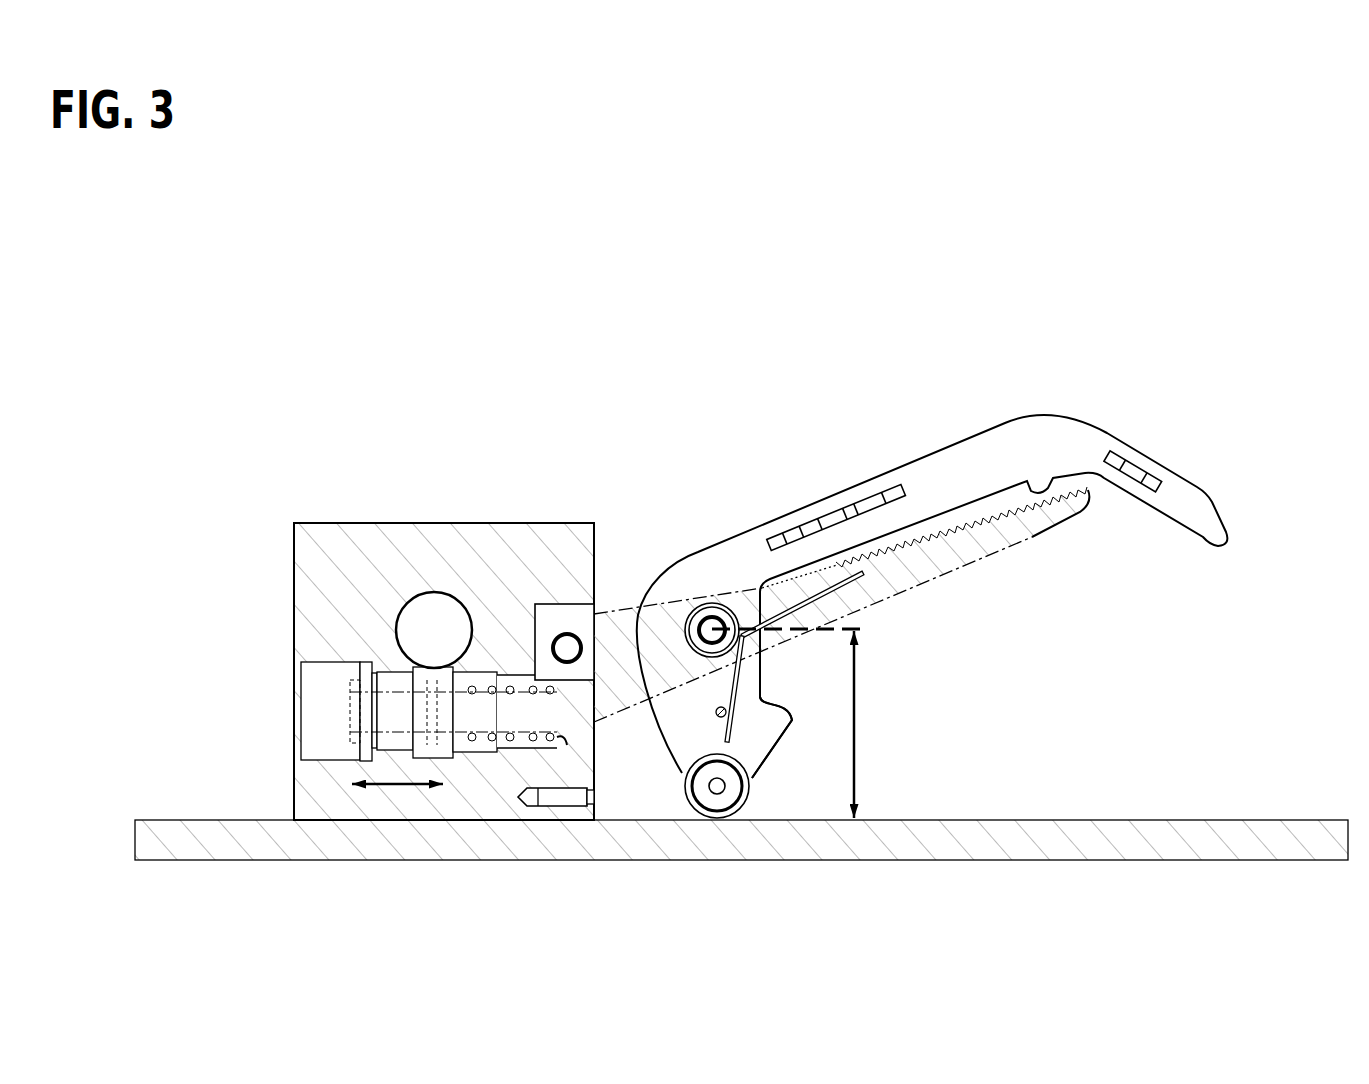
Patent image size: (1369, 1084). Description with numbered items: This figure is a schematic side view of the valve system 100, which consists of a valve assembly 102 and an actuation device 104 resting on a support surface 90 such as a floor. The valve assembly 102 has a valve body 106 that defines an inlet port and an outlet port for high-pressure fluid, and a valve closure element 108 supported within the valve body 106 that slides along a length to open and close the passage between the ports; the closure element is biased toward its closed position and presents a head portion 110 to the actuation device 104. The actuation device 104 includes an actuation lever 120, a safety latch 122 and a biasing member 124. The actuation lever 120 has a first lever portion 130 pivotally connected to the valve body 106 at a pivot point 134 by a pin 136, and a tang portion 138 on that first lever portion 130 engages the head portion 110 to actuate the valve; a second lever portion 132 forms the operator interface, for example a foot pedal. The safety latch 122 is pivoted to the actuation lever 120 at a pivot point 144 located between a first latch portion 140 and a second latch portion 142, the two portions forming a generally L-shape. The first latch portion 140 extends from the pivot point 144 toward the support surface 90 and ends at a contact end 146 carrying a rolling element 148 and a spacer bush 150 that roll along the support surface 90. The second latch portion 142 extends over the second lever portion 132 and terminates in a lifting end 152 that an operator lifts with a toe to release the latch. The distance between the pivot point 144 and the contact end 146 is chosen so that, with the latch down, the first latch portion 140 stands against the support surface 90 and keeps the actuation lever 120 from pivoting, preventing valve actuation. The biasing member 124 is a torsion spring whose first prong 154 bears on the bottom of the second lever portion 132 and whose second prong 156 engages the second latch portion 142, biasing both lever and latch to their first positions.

The support surface 90 is at (1227, 822).
The valve system 100 is at (317, 338).
The valve assembly 102 is at (310, 508).
The actuation device 104 is at (938, 362).
The valve body 106 is at (305, 565).
The valve closure element 108 is at (468, 713).
The head portion 110 is at (548, 627).
The actuation lever 120 is at (1007, 570).
The safety latch 122 is at (975, 423).
The biasing member 124 is at (728, 613).
The first lever portion 130 is at (605, 625).
The second lever portion 132 is at (935, 570).
The pivot point 134 is at (575, 636).
The pin 136 is at (565, 645).
The tang portion 138 is at (568, 733).
The first latch portion 140 is at (758, 731).
The second latch portion 142 is at (862, 492).
The pivot point 144 is at (710, 620).
The contact end 146 is at (717, 820).
The rolling element 148 is at (752, 787).
The spacer bush 150 is at (737, 795).
The lifting end 152 is at (1203, 517).
The first prong 154 is at (857, 575).
The second prong 156 is at (735, 697).